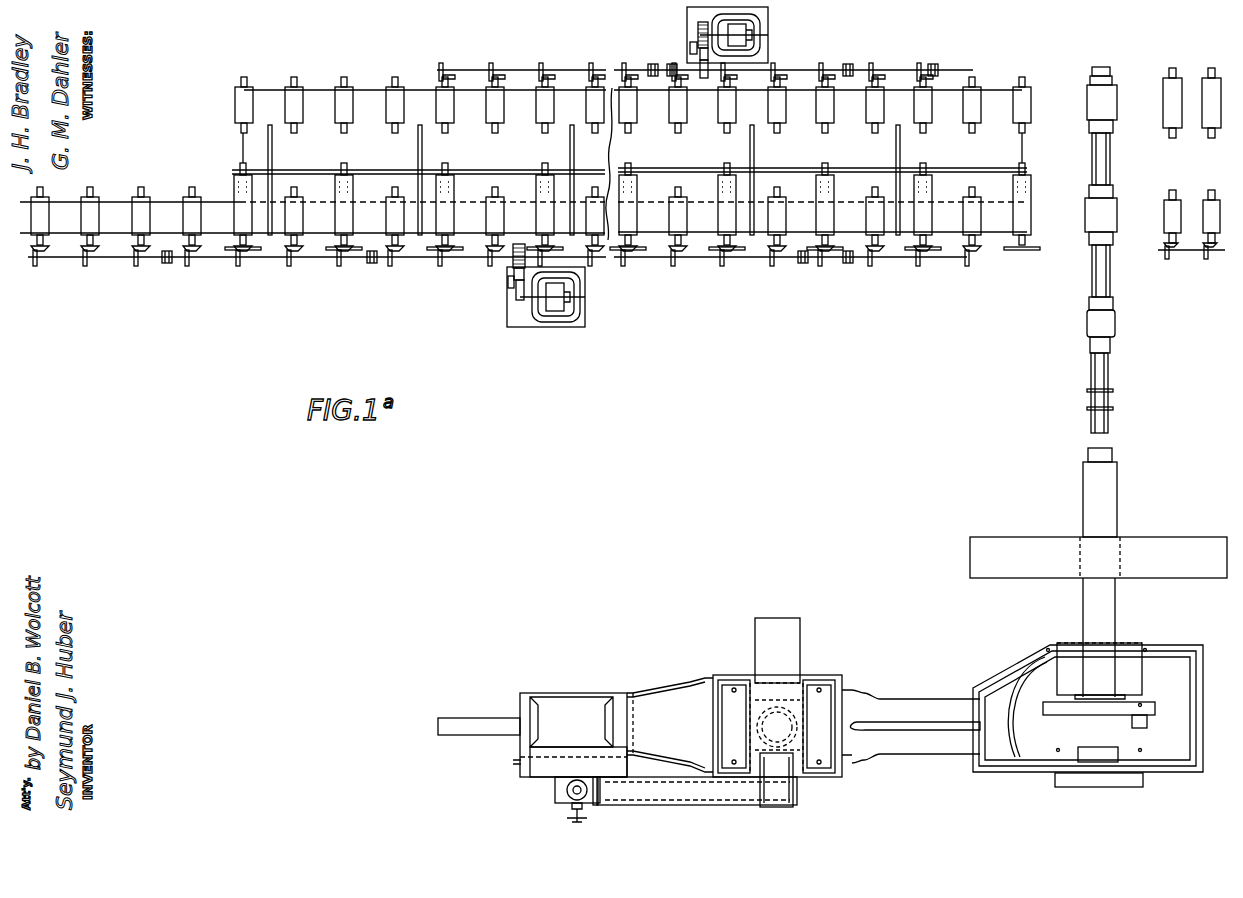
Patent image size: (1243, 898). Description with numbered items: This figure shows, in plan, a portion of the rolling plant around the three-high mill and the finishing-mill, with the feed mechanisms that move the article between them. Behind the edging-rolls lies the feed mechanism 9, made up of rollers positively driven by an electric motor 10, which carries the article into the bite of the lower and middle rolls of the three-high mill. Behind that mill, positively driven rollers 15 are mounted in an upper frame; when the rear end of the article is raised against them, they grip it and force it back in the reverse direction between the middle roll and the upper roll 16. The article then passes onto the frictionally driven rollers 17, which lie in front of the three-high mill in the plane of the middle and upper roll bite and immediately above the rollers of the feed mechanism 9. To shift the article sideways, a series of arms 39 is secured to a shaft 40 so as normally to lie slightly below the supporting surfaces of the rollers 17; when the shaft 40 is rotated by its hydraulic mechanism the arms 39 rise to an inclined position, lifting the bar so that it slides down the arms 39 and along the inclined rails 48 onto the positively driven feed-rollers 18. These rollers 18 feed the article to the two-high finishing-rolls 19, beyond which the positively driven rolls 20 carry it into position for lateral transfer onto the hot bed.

The feed mechanism 9 is at (134, 210).
The electric motor 10 is at (560, 315).
The rollers 15 is at (1205, 209).
The upper roll 16 is at (1112, 216).
The frictionally-driven rollers 17 is at (448, 220).
The rollers 18 is at (830, 110).
The two-high finishing-rolls 19 is at (1110, 106).
The positively-driven rolls 20 is at (1205, 92).
The arms 39 is at (273, 185).
The shaft 40 is at (664, 172).
The inclined rails 48 is at (423, 160).